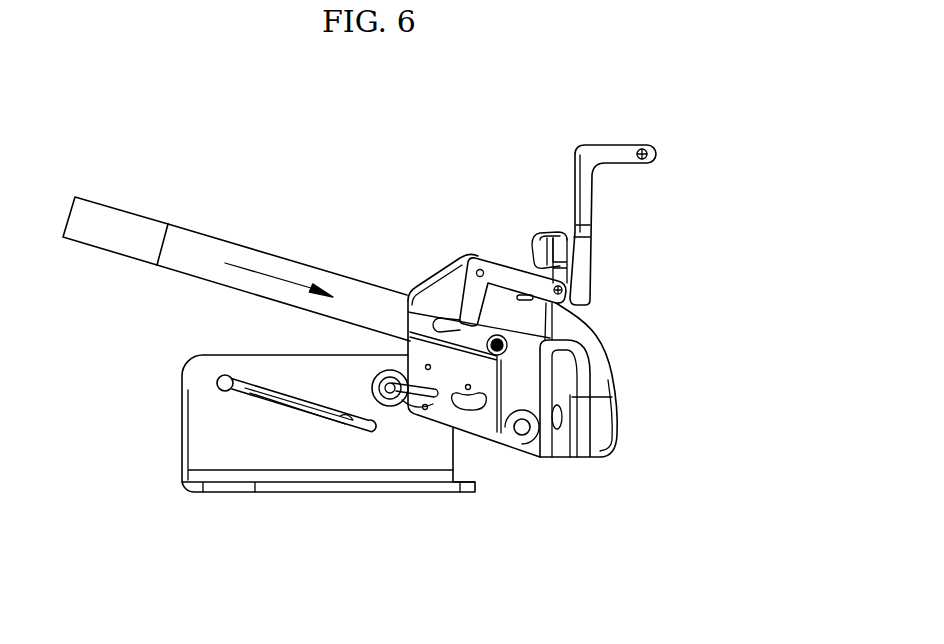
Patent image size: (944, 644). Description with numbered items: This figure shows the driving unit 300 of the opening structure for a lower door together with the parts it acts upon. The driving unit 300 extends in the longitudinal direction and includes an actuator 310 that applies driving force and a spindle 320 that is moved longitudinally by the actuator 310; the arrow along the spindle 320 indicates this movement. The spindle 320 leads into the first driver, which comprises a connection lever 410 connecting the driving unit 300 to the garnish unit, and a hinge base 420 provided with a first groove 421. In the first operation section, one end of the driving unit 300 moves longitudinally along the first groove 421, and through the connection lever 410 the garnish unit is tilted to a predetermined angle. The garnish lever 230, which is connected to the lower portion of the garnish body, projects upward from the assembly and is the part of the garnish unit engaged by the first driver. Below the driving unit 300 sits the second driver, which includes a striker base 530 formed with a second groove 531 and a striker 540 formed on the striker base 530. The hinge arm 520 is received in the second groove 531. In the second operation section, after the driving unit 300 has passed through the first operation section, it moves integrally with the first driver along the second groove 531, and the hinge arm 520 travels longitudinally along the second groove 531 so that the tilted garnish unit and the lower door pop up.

The driving unit 300 is at (280, 142).
The actuator 310 is at (112, 203).
The spindle 320 is at (213, 242).
The connection lever 410 is at (507, 277).
The hinge base 420 is at (563, 430).
The first groove 421 is at (535, 455).
The garnish lever 230 is at (612, 153).
The hinge arm 520 is at (275, 398).
The striker base 530 is at (313, 453).
The second groove 531 is at (352, 423).
The striker 540 is at (393, 410).